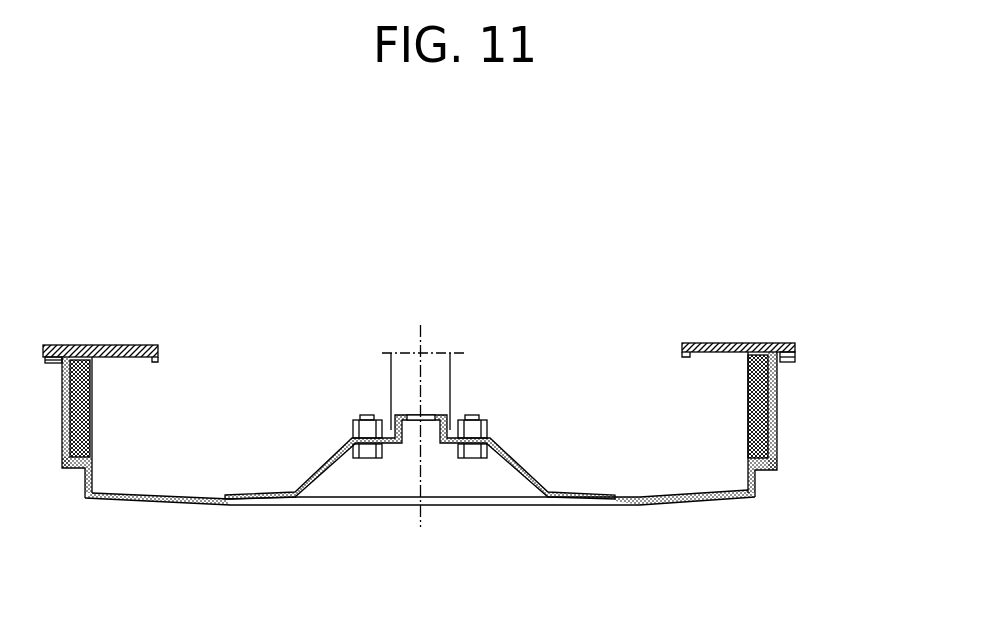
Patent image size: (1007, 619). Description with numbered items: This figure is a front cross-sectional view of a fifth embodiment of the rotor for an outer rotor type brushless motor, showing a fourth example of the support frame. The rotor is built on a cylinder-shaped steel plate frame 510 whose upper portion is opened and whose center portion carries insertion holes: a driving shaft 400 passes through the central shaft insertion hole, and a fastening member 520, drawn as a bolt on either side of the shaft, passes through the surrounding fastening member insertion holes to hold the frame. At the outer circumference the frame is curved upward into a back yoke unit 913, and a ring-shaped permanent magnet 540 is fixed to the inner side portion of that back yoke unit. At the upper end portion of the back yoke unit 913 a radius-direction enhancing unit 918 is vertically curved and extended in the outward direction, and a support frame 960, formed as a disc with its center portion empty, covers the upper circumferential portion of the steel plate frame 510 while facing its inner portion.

The driving shaft 400 is at (397, 380).
The steel plate frame 510 is at (687, 503).
The fastening member 520 is at (473, 456).
The ring-shaped permanent magnet 540 is at (748, 428).
The back yoke unit 913 is at (777, 437).
The radius-direction enhancing unit 918 is at (797, 352).
The support frame 960 is at (714, 343).